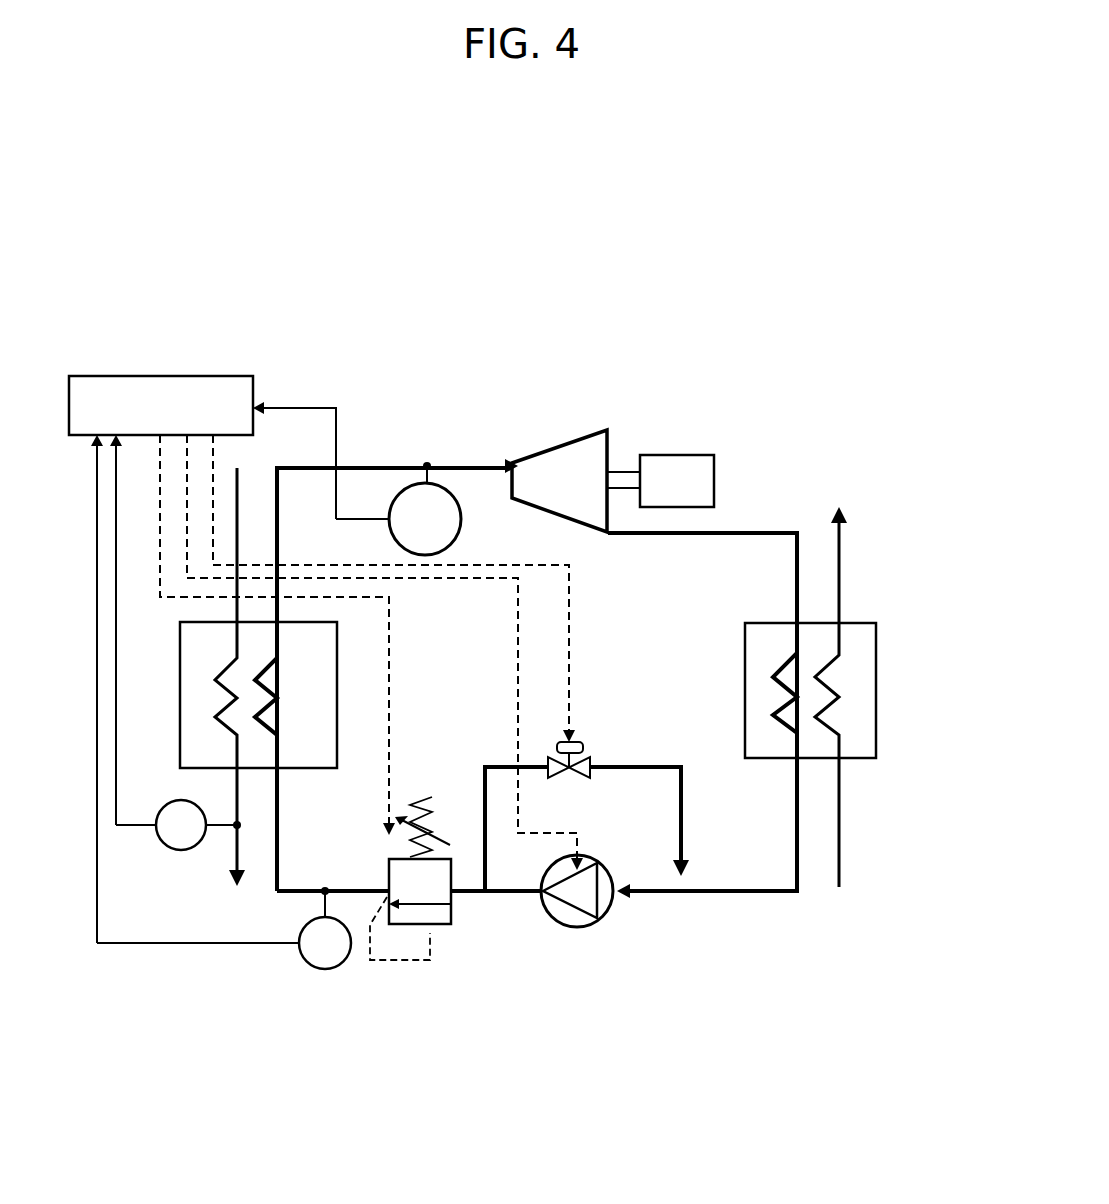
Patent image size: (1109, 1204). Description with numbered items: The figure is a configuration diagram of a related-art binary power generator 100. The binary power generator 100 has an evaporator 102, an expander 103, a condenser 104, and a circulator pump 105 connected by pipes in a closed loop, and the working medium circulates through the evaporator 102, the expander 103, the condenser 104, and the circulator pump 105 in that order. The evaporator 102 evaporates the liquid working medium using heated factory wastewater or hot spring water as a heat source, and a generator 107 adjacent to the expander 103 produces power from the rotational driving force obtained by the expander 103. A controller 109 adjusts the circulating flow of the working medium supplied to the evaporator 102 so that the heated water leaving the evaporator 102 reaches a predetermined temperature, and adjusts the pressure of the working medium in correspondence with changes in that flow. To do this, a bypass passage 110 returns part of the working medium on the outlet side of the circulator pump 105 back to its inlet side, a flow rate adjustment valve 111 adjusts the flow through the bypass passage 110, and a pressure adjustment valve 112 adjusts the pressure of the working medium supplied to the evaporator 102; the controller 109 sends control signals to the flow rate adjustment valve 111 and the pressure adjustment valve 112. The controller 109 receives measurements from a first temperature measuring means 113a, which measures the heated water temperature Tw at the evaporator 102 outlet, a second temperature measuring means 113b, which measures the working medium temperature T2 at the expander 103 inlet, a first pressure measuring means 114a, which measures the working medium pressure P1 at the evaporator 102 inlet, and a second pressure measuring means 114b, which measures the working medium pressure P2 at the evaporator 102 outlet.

The binary power generator 100 is at (770, 308).
The evaporator 102 is at (180, 712).
The expander 103 is at (595, 445).
The condenser 104 is at (876, 630).
The circulator pump 105 is at (610, 868).
The generator 107 is at (695, 485).
The controller 109 is at (232, 376).
The bypass passage 110 is at (683, 813).
The flow rate adjustment valve 111 is at (580, 742).
The pressure adjustment valve 112 is at (451, 915).
The first temperature measuring means 113a is at (178, 850).
The second temperature measuring means 113b is at (417, 578).
The first pressure measuring means 114a is at (325, 969).
The second pressure measuring means 114b is at (447, 547).